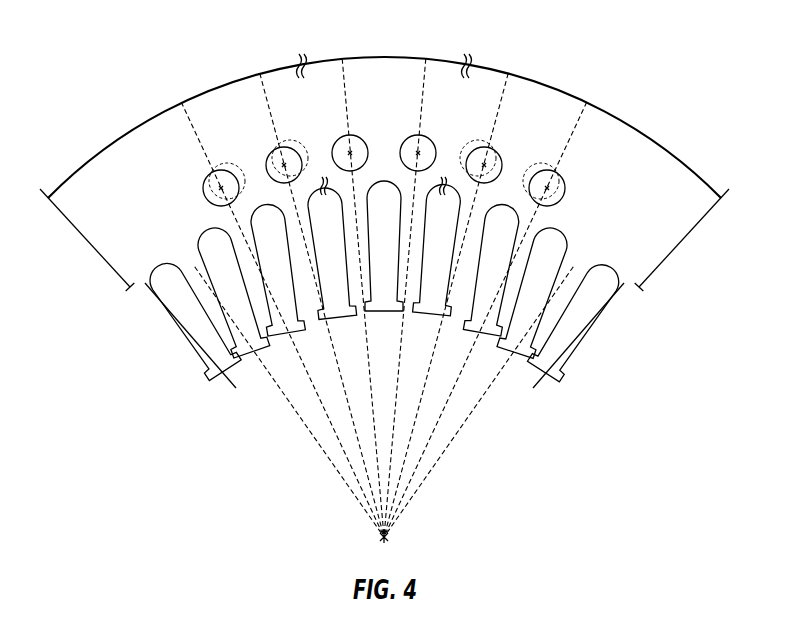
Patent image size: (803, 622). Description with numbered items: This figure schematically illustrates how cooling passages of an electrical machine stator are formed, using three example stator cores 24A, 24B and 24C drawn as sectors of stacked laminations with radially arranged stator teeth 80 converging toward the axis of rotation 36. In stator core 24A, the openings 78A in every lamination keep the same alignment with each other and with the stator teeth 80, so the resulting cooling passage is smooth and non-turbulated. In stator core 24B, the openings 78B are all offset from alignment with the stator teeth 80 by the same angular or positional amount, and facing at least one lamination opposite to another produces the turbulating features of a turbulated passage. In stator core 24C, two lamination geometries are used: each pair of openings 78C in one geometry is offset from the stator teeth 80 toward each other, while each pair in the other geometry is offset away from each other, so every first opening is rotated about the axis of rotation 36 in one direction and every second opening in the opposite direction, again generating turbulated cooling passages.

The stator core 24A is at (385, 57).
The stator core 24B is at (228, 80).
The stator core 24C is at (548, 80).
The openings 78A is at (335, 143).
The openings 78B is at (268, 157).
The openings 78C is at (500, 157).
The stator teeth 80 is at (330, 317).
The axis of rotation 36 is at (387, 540).